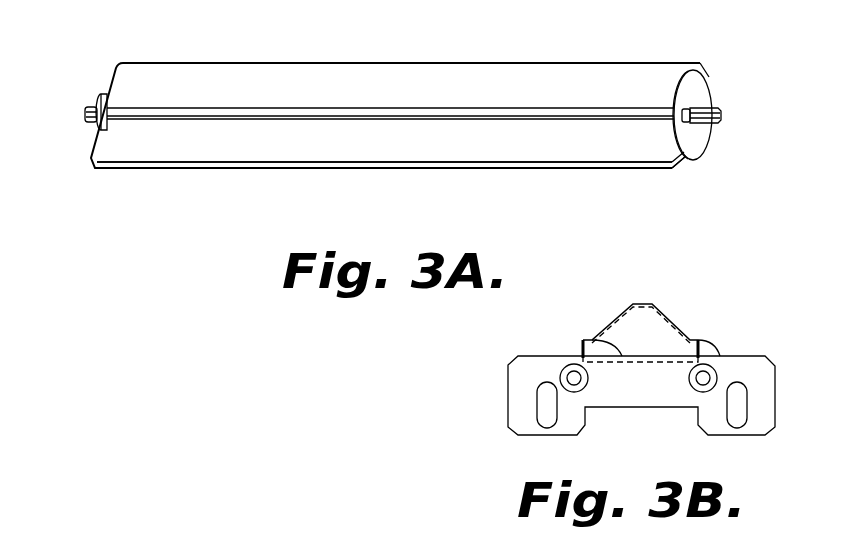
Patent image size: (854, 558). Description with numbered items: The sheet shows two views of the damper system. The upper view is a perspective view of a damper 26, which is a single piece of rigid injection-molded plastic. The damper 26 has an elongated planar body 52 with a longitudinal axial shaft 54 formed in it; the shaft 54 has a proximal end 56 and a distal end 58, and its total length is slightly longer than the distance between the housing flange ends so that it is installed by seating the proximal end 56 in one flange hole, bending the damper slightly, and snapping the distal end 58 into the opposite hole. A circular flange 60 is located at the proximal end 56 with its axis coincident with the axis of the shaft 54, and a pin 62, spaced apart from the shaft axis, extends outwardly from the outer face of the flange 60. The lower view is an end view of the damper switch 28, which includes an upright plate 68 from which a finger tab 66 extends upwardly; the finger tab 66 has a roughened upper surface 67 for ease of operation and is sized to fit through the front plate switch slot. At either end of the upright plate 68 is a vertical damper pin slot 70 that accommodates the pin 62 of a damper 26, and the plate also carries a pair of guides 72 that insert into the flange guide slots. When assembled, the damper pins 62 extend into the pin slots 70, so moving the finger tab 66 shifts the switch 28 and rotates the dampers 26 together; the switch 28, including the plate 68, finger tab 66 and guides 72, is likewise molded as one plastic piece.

In FIG. 3A, the damper 26 is at (257, 62).
In FIG. 3A, the elongated planar body 52 is at (279, 147).
In FIG. 3A, the longitudinal axial shaft 54 is at (496, 113).
In FIG. 3A, the proximal end 56 is at (720, 118).
In FIG. 3A, the distal end 58 is at (85, 114).
In FIG. 3A, the circular flange 60 is at (706, 98).
In FIG. 3A, the pin 62 is at (675, 126).
In FIG. 3B, the finger tab 66 is at (595, 340).
In FIG. 3B, the roughened upper surface 67 is at (636, 303).
In FIG. 3B, the damper switch 28 is at (705, 345).
In FIG. 3B, the upright plate 68 is at (517, 393).
In FIG. 3B, the vertical damper pin slot 70 is at (540, 422).
In FIG. 3B, the guides 72 is at (710, 369).